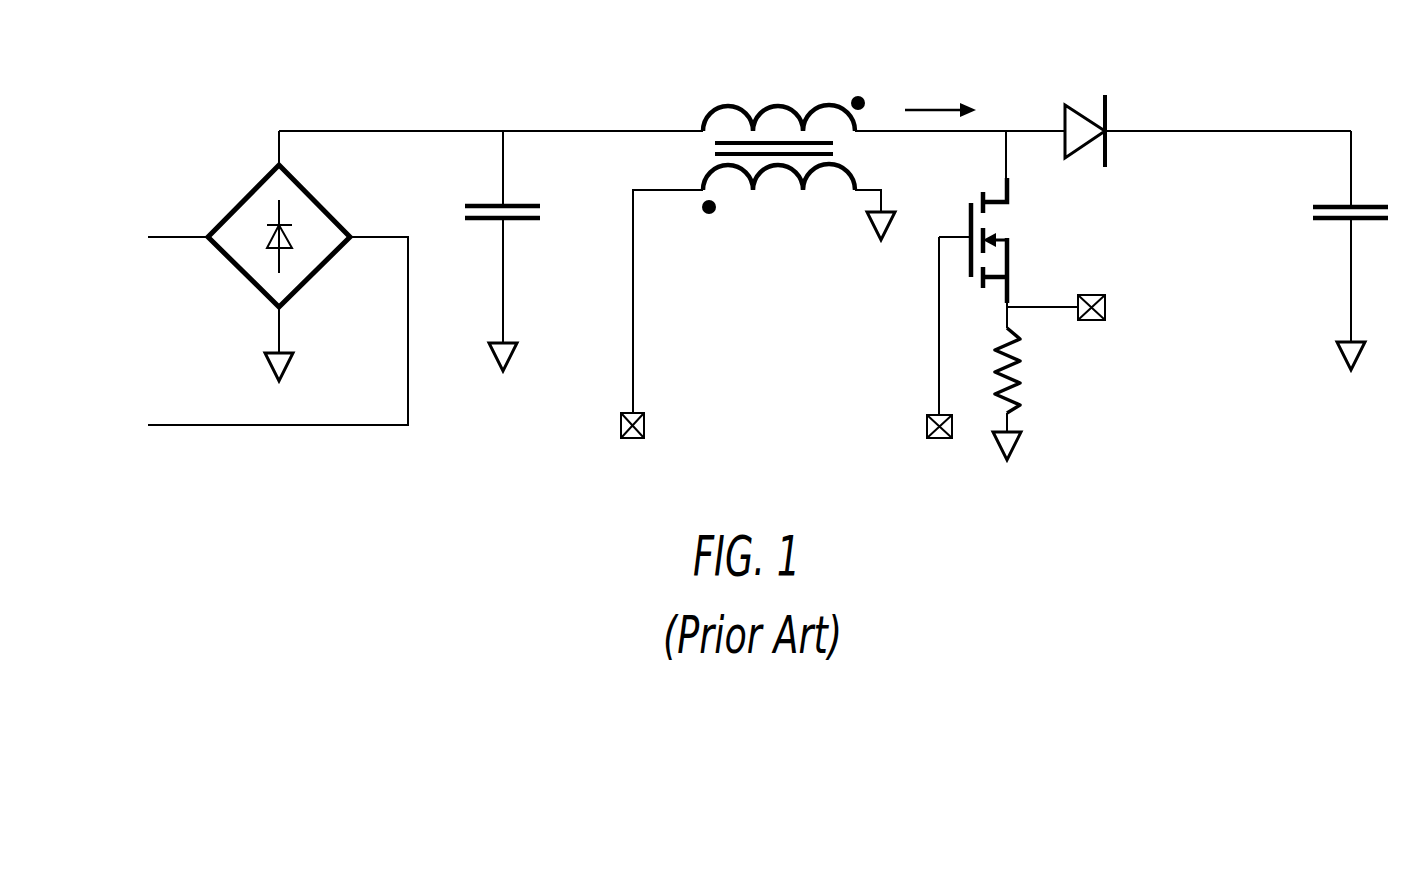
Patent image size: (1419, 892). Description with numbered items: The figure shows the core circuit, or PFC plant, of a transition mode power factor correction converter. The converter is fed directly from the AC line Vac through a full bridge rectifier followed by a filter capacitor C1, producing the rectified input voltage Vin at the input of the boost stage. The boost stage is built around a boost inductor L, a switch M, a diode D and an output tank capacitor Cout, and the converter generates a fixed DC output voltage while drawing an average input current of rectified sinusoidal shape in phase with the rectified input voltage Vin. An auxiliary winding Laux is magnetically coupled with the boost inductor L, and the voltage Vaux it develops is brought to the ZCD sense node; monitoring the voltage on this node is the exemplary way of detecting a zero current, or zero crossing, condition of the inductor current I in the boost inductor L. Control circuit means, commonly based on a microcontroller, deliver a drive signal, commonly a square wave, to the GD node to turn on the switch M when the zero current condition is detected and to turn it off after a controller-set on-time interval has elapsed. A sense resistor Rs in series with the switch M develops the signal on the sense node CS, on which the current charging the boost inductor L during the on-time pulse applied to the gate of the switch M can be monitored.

The AC line input Vac is at (278, 278).
The filter capacitor C1 is at (497, 251).
The rectified input voltage Vin is at (603, 115).
The boost inductor L is at (784, 113).
The auxiliary winding Laux is at (799, 209).
The auxiliary winding voltage Vaux is at (674, 301).
The ZCD sense node ZCD is at (663, 426).
The inductor current I is at (940, 97).
The diode D is at (1085, 112).
The switch M is at (993, 240).
The GD node GD is at (916, 337).
The sense node CS is at (1073, 309).
The sense resistor Rs is at (1022, 381).
The output tank capacitor Cout is at (1321, 250).